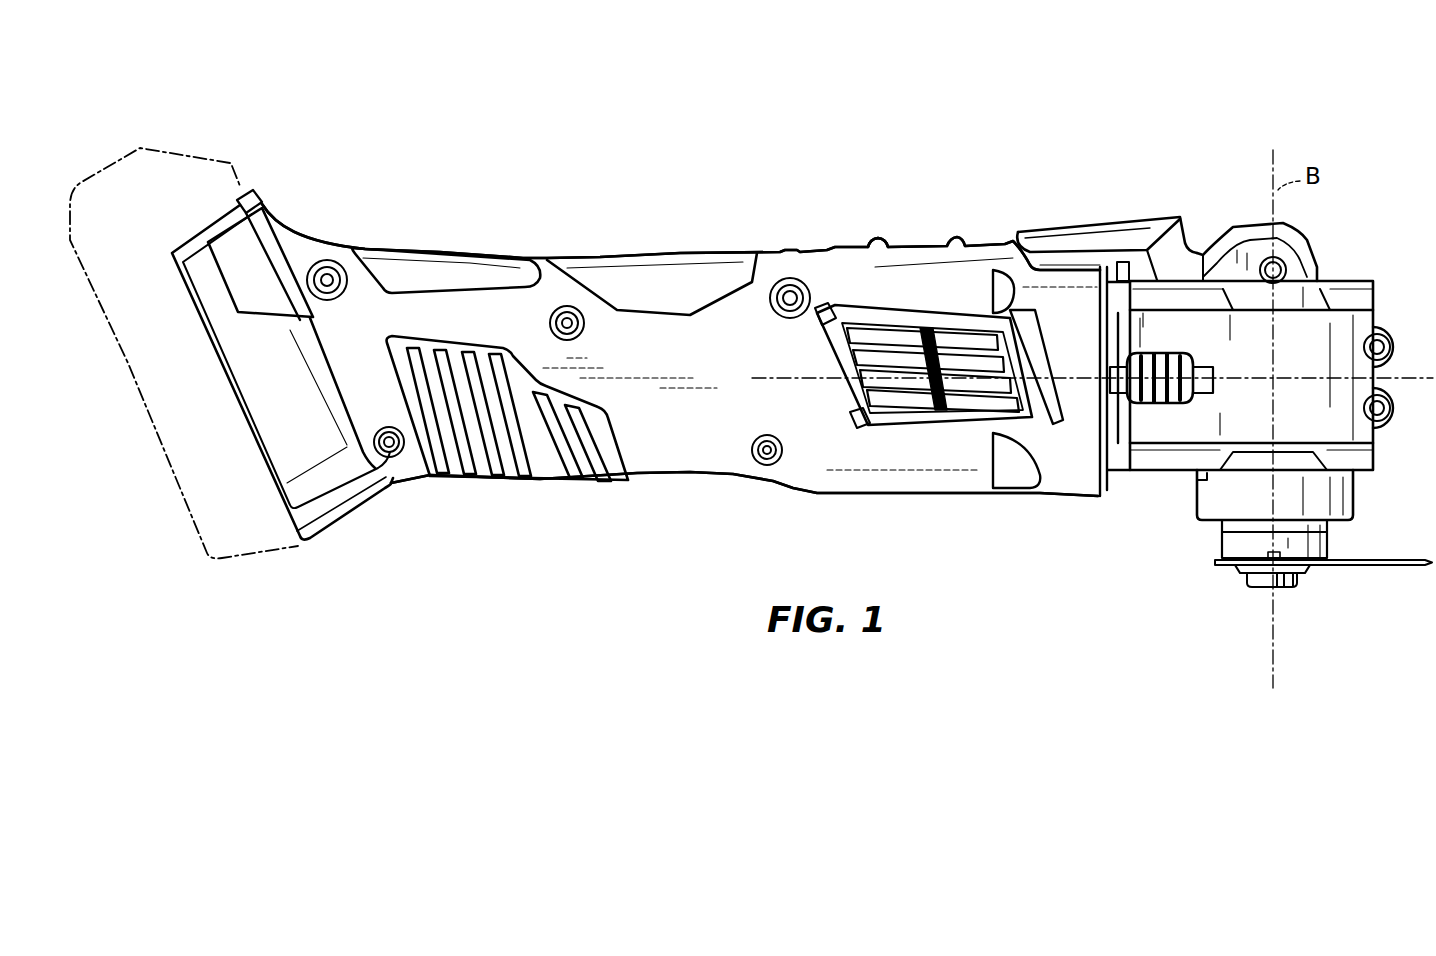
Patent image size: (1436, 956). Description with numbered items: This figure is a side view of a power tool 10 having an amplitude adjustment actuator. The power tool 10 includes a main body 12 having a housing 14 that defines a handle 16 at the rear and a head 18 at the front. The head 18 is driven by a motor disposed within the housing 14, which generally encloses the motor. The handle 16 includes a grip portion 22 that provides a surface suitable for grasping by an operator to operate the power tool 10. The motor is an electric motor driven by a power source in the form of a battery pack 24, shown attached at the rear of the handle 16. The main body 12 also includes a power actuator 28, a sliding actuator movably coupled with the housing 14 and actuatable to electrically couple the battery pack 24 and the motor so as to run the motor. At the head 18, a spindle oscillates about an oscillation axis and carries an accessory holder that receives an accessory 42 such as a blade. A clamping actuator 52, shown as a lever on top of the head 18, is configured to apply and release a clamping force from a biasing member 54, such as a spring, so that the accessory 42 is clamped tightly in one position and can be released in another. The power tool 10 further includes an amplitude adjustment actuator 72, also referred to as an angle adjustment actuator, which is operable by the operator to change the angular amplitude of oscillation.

The power tool 10 is at (1052, 108).
The main body 12 is at (631, 248).
The housing 14 is at (494, 256).
The handle 16 is at (927, 478).
The head 18 is at (1320, 338).
The grip portion 22 is at (693, 418).
The battery pack 24 is at (203, 153).
The power actuator 28 is at (888, 240).
The accessory 42 is at (1405, 568).
The clamping actuator 52 is at (1127, 217).
The biasing member 54 is at (1238, 579).
The amplitude adjustment actuator 72 is at (1168, 412).